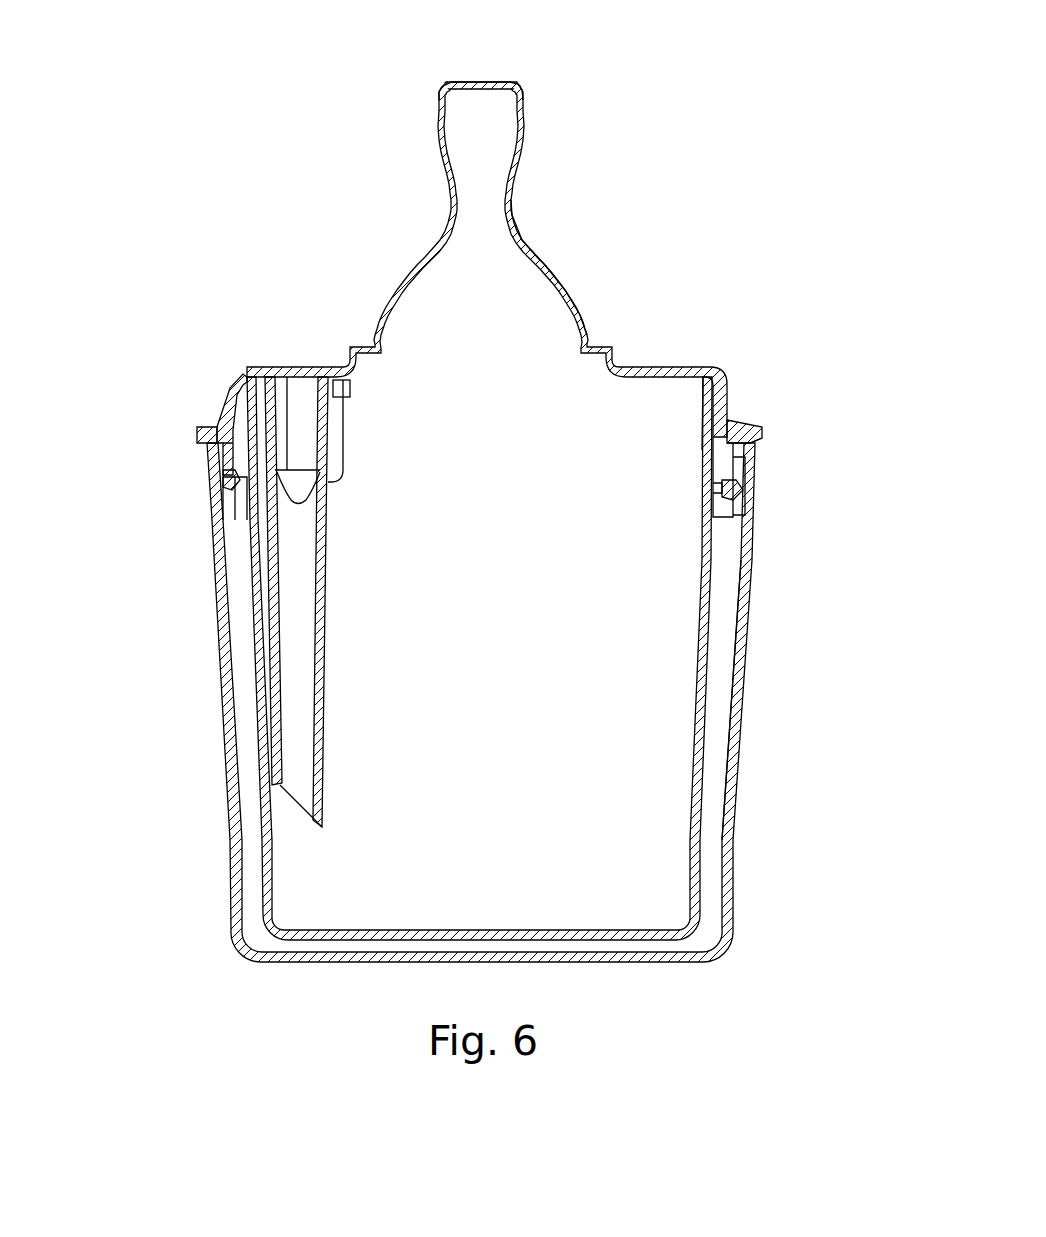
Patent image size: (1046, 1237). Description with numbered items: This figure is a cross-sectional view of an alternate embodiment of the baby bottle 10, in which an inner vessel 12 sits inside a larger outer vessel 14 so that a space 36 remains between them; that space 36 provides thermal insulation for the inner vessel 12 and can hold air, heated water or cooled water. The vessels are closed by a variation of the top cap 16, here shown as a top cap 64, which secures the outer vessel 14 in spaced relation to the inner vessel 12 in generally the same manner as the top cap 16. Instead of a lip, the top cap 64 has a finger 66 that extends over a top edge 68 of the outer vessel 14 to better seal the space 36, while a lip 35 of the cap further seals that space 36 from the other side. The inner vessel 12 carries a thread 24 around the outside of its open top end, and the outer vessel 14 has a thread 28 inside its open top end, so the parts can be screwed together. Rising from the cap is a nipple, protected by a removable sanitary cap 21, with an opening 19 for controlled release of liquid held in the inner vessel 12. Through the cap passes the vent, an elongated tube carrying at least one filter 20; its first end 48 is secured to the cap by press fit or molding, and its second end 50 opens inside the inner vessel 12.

The baby bottle 10 is at (250, 178).
The inner vessel 12 is at (698, 677).
The outer vessel 14 is at (740, 705).
The top cap 16 is at (660, 370).
The opening 19 is at (482, 80).
The filter 20 is at (298, 420).
The removable sanitary cap 21 is at (557, 267).
The thread 24 is at (730, 493).
The thread 28 is at (720, 487).
The lip 35 is at (697, 398).
The space 36 is at (717, 775).
The first end 48 is at (302, 378).
The second end 50 is at (293, 800).
The top cap 64 is at (353, 320).
The finger 66 is at (210, 427).
The top edge 68 is at (755, 443).